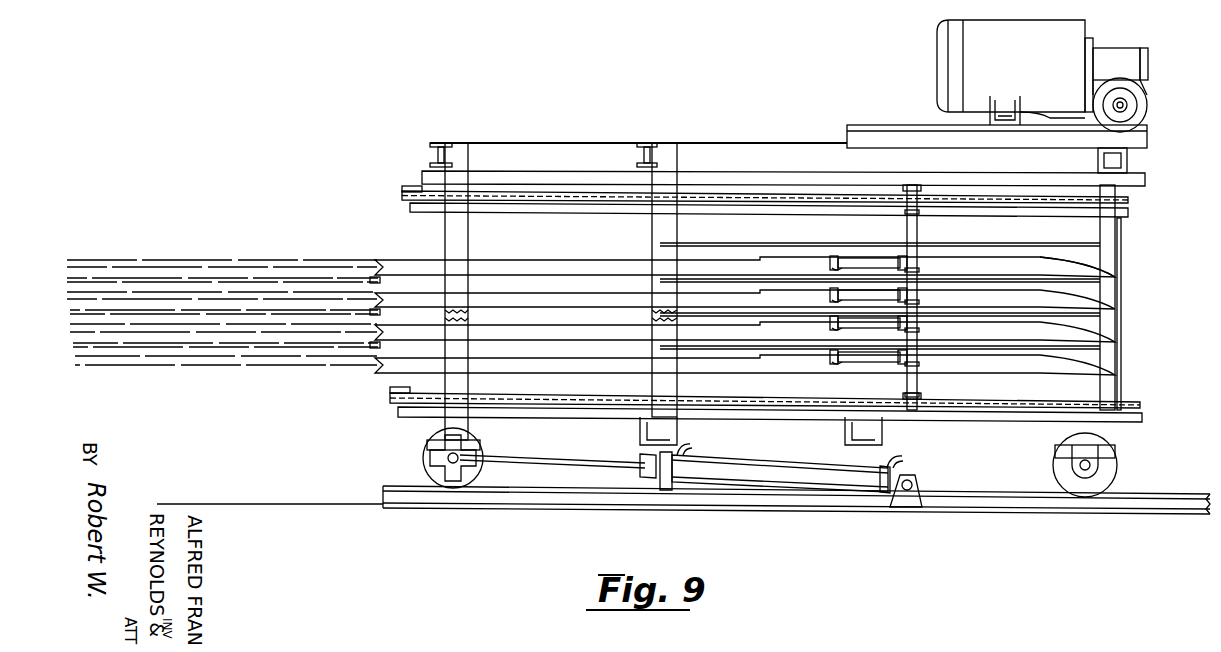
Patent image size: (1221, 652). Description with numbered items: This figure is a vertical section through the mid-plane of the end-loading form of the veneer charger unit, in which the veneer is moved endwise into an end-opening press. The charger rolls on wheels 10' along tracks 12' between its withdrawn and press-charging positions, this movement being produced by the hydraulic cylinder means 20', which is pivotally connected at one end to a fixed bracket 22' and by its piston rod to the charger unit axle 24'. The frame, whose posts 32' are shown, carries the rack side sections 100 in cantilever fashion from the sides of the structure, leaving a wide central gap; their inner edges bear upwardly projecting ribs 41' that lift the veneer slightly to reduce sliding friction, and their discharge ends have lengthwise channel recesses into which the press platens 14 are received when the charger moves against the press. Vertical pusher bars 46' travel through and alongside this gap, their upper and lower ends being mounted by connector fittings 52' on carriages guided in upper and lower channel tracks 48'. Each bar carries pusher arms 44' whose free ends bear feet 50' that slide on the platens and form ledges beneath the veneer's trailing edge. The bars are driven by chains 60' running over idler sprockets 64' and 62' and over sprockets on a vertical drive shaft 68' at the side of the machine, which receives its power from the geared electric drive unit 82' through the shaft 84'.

The wheels 10' is at (769, 462).
The tracks 12' is at (796, 486).
The press platens 14 is at (212, 260).
The hydraulic cylinder means 20' is at (781, 461).
The fixed bracket 22' is at (930, 486).
The charger unit axle 24' is at (512, 457).
The frame posts 32' is at (805, 291).
The upwardly projecting ribs 41' is at (1060, 249).
The pusher arms 44' is at (867, 293).
The pusher bars 46' is at (933, 297).
The tracks 48' is at (771, 297).
The foot 50' is at (822, 332).
The connector fittings 52' is at (933, 274).
The chains 60' is at (765, 299).
The idler sprocket 62' is at (797, 309).
The idler sprocket 64' is at (391, 309).
The vertical drive shaft 68' is at (1145, 314).
The geared electric drive unit 82' is at (1031, 69).
The shaft 84' is at (1145, 90).
The side sections 100 is at (530, 300).